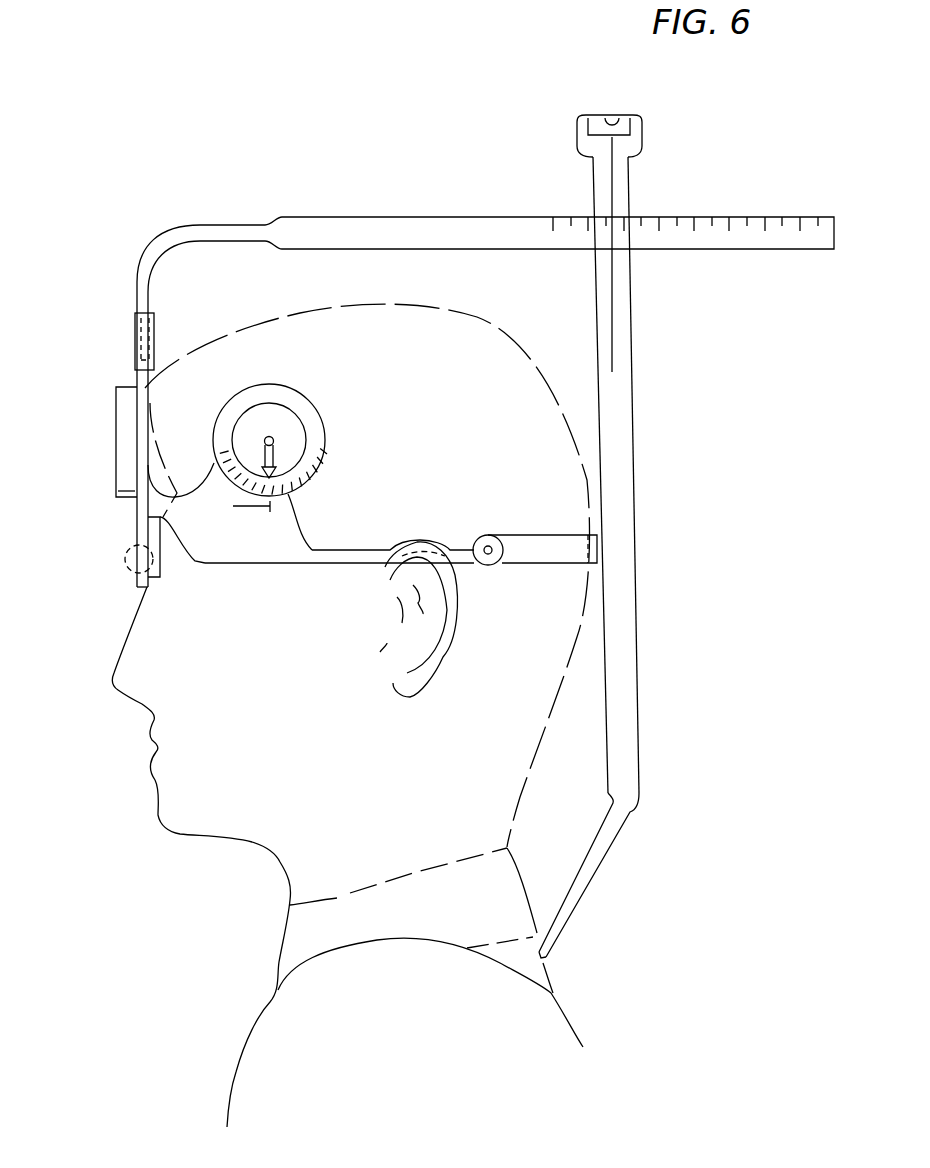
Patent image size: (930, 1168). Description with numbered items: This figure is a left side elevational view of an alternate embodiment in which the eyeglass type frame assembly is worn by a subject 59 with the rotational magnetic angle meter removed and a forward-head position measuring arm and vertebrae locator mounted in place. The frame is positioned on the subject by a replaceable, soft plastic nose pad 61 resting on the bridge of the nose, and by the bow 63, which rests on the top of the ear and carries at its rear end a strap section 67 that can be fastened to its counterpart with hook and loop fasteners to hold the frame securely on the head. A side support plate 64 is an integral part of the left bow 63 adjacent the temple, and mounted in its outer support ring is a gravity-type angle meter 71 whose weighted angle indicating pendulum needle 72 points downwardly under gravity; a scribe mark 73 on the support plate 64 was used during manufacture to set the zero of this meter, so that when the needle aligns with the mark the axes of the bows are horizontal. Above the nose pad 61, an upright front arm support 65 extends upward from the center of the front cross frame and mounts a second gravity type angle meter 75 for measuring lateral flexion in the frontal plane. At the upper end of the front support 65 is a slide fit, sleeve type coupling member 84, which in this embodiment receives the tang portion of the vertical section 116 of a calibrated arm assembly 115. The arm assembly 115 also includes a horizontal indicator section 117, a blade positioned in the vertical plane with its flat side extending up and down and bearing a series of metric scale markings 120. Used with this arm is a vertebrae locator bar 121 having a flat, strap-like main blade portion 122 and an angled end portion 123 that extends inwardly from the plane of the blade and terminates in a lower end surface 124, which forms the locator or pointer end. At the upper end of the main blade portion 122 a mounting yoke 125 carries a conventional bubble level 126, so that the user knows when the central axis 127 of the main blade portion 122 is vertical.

The subject 59 is at (112, 685).
The nose pad 61 is at (137, 558).
The bow 63 is at (347, 558).
The side support plate 64 is at (243, 517).
The upright front arm support 65 is at (152, 396).
The strap section 67 is at (541, 546).
The gravity-type angle meter 71 is at (275, 418).
The angle indicating pendulum needle 72 is at (278, 458).
The scribe mark 73 is at (236, 505).
The gravity type angle meter 75 is at (125, 395).
The sleeve type coupling member 84 is at (140, 335).
The calibrated arm assembly 115 is at (332, 195).
The vertical section 116 is at (150, 288).
The horizontal indicator section 117 is at (403, 230).
The metric scale markings 120 is at (705, 215).
The vertebrae locator bar 121 is at (618, 450).
The main blade portion 122 is at (636, 512).
The angled end portion 123 is at (607, 834).
The lower end surface 124 is at (547, 967).
The mounting yoke 125 is at (636, 140).
The bubble level 126 is at (628, 116).
The central axis 127 is at (618, 303).